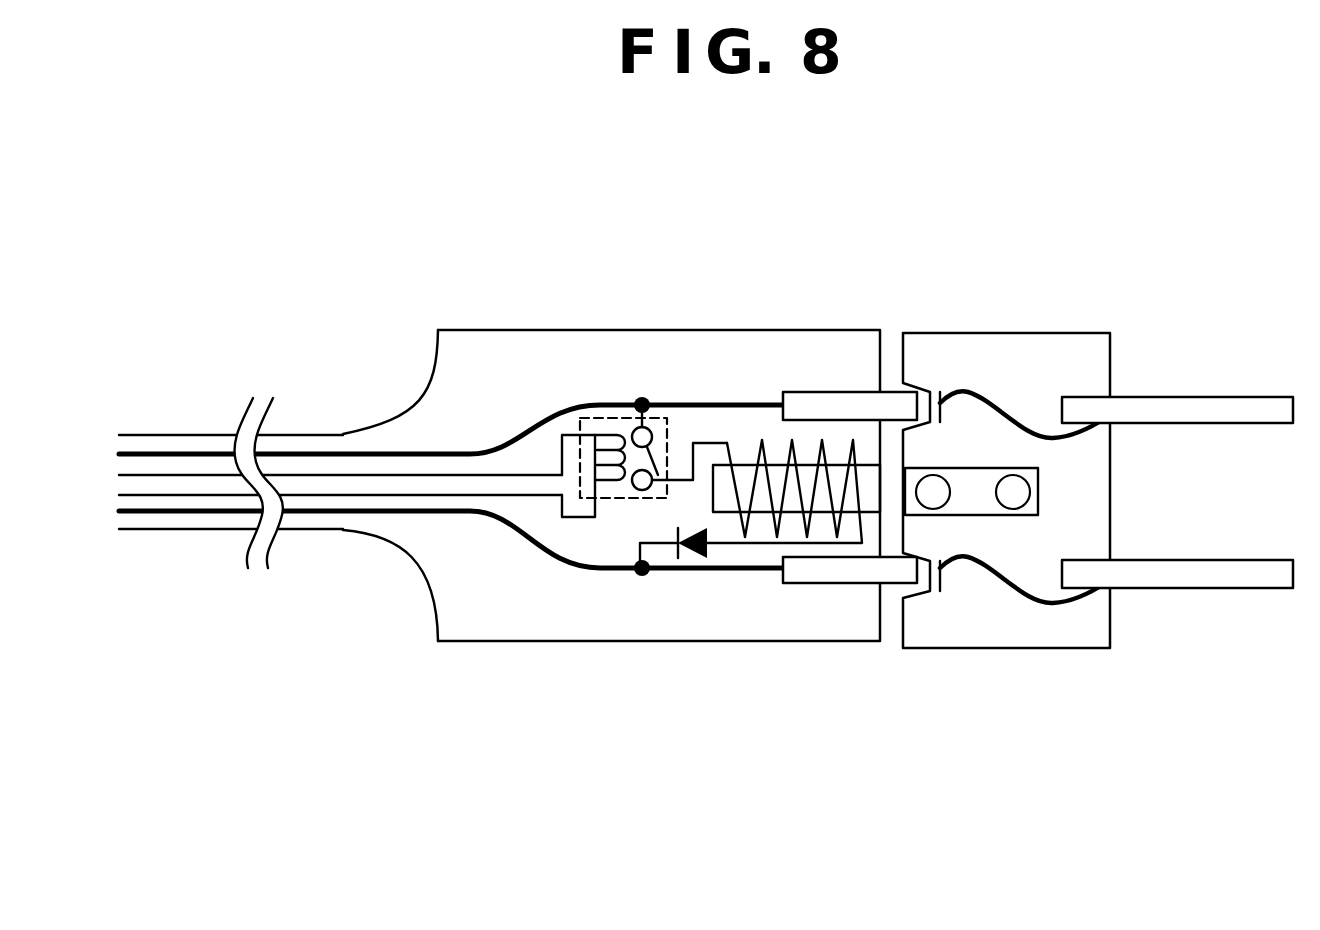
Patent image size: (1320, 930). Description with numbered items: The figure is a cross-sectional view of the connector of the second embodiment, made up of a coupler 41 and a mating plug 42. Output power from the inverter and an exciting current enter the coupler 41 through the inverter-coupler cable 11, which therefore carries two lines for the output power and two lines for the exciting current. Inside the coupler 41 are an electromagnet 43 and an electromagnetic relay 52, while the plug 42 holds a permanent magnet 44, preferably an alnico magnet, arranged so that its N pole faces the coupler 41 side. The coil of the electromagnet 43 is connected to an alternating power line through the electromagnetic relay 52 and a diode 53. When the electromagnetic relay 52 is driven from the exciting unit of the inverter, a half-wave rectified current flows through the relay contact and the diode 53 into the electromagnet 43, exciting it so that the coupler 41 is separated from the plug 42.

The inverter-coupler cable 11 is at (158, 454).
The coupler 41 is at (490, 641).
The plug 42 is at (1010, 647).
The electromagnet 43 is at (726, 500).
The permanent magnet 44 is at (1038, 482).
The electromagnetic relay 52 is at (614, 498).
The diode 53 is at (679, 558).